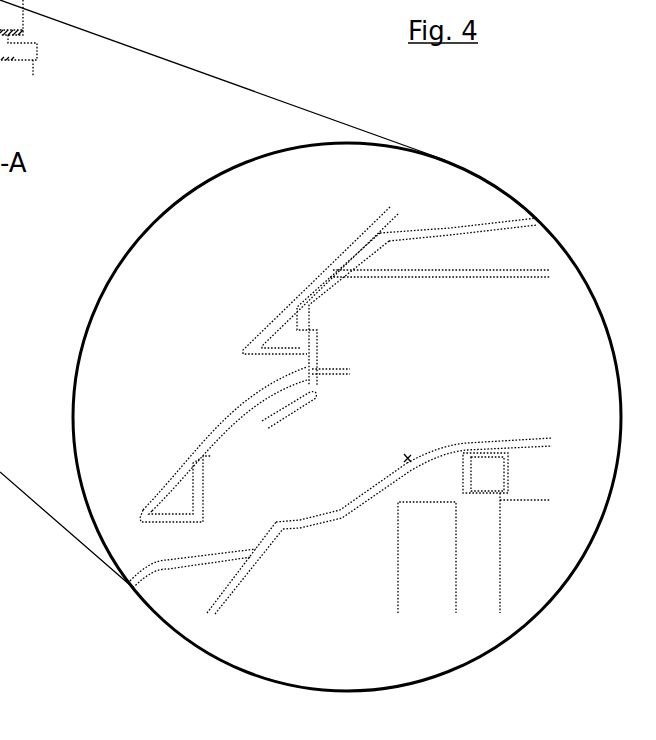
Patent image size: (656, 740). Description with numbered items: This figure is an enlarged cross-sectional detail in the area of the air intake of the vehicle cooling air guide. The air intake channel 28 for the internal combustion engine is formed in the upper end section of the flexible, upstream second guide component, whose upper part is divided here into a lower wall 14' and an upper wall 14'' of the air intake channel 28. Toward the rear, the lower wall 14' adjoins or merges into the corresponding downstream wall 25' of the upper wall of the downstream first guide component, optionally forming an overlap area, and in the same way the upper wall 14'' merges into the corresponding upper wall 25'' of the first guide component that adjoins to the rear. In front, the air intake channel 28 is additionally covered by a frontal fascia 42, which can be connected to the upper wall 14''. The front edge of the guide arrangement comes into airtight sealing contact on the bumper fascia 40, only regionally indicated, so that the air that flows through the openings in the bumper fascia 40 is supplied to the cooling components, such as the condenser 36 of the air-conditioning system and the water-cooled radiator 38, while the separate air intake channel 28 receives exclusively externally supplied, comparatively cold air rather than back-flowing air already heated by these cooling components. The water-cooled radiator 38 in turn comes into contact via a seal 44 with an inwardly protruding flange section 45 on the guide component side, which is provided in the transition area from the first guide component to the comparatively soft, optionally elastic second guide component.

The upper wall 14'' is at (339, 277).
The upper wall 25'' is at (452, 211).
The air intake channel 28 is at (111, 355).
The frontal fascia 42 is at (207, 417).
The lower wall 14' is at (358, 453).
The downstream wall 25' is at (479, 414).
The flange section 45 is at (468, 483).
The seal 44 is at (497, 469).
The condenser 36 is at (438, 569).
The water-cooled radiator 38 is at (542, 589).
The bumper fascia 40 is at (257, 543).